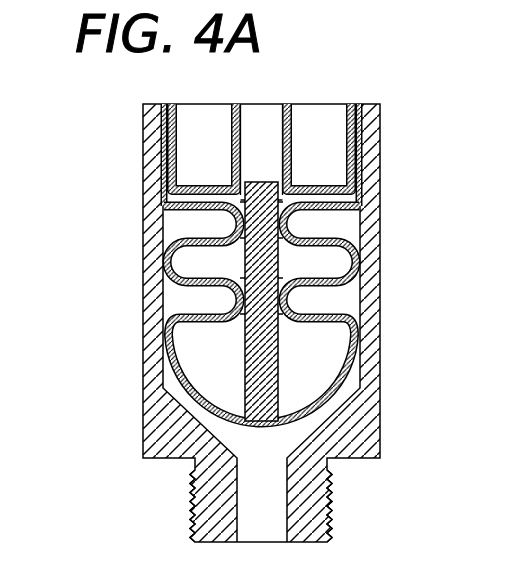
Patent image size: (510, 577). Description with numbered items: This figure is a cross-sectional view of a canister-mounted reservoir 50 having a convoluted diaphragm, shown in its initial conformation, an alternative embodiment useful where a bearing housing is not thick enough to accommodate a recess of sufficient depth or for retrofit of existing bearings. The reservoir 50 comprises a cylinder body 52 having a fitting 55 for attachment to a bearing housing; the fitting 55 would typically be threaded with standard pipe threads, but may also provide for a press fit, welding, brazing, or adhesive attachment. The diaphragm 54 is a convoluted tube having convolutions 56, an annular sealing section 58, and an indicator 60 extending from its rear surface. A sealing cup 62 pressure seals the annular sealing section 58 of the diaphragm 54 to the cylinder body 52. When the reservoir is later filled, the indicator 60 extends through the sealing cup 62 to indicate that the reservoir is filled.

The reservoir 50 is at (94, 210).
The cylinder body 52 is at (143, 363).
The diaphragm 54 is at (352, 345).
The fitting 55 is at (329, 518).
The convolutions 56 is at (328, 305).
The annular sealing section 58 is at (362, 153).
The indicator 60 is at (281, 372).
The sealing cup 62 is at (291, 120).